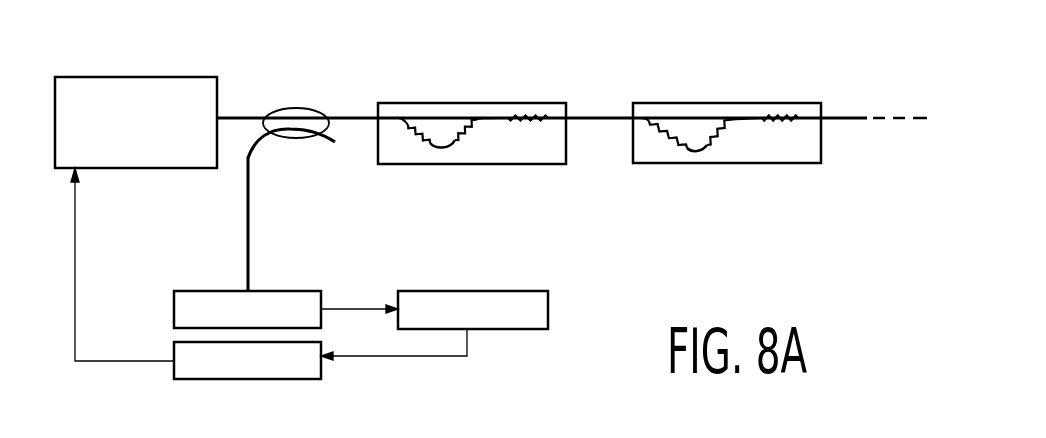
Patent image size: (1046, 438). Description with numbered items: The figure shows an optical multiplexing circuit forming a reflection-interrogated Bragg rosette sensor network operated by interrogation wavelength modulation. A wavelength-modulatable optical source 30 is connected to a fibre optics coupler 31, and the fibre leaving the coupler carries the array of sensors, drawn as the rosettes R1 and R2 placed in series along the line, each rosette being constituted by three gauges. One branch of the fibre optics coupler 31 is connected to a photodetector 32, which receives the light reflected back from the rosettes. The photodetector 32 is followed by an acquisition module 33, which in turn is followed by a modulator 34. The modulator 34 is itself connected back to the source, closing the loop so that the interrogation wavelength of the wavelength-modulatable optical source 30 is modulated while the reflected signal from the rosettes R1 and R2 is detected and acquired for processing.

The wavelength-modulatable optical source 30 is at (153, 83).
The fibre optics coupler 31 is at (302, 105).
The photodetector 32 is at (174, 304).
The acquisition module 33 is at (503, 324).
The modulator 34 is at (174, 368).
The rosette R1 is at (472, 116).
The rosette R2 is at (727, 116).